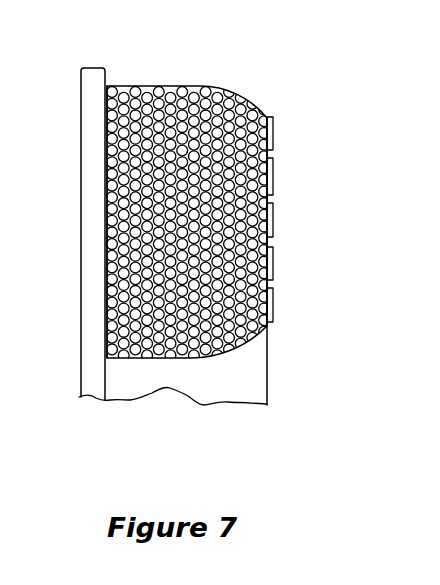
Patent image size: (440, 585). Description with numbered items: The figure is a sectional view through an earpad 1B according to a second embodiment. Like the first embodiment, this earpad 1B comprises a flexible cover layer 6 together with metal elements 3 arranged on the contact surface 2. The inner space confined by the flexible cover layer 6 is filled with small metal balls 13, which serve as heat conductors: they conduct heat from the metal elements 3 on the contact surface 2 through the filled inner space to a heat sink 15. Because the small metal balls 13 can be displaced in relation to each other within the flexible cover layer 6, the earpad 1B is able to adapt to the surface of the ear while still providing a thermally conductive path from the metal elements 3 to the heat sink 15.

The earpad 1B is at (243, 230).
The contact surface 2 is at (268, 288).
The metal elements 3 is at (273, 133).
The flexible cover layer 6 is at (207, 192).
The small metal balls 13 is at (200, 92).
The heat sink 15 is at (87, 123).